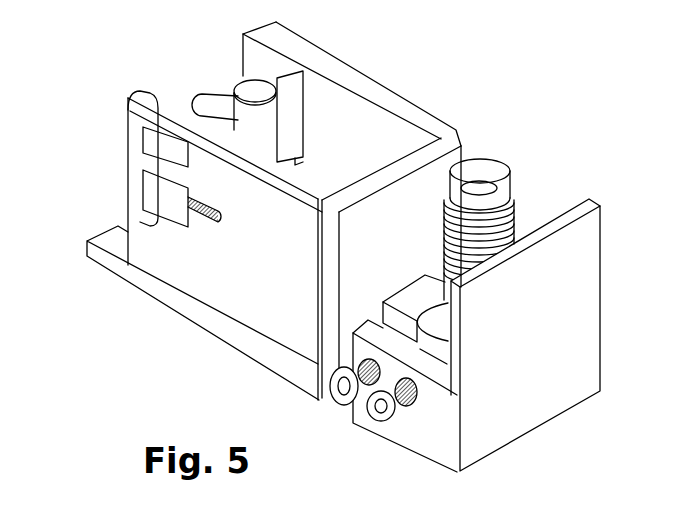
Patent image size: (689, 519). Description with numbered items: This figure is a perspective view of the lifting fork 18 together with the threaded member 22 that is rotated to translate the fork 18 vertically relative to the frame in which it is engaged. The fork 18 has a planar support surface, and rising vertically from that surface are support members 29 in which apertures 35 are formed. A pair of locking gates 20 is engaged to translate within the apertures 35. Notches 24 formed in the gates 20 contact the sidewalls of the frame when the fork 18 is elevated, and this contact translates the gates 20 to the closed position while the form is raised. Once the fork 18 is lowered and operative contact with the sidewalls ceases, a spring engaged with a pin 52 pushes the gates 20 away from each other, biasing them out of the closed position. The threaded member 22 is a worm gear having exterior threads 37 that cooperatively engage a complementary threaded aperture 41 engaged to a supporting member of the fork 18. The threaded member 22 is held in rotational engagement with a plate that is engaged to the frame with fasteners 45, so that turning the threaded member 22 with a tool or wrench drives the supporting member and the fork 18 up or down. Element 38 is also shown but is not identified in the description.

The fork 18 is at (320, 357).
The locking gates 20 is at (197, 103).
The threaded member 22 is at (497, 177).
The notches 24 is at (160, 157).
The support members 29 is at (370, 90).
The apertures 35 is at (157, 123).
The exterior threads 37 is at (513, 233).
The hinge block 38 is at (303, 97).
The threaded aperture 41 is at (442, 340).
The fasteners 45 is at (400, 423).
The pin 52 is at (147, 173).